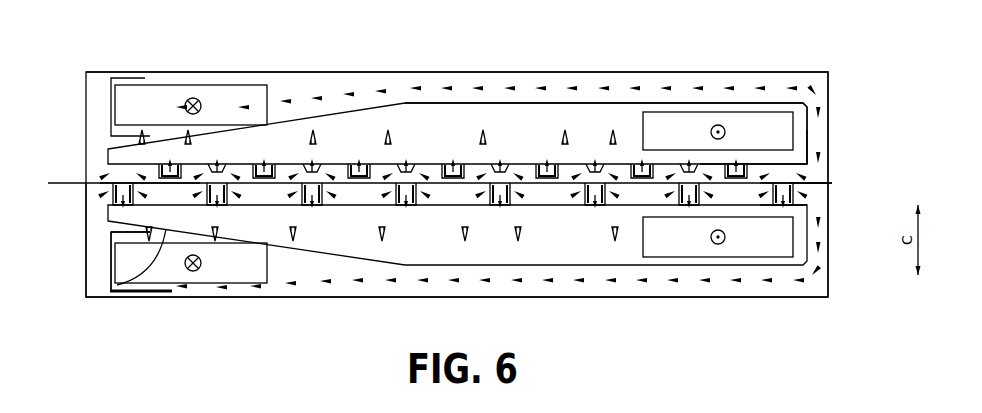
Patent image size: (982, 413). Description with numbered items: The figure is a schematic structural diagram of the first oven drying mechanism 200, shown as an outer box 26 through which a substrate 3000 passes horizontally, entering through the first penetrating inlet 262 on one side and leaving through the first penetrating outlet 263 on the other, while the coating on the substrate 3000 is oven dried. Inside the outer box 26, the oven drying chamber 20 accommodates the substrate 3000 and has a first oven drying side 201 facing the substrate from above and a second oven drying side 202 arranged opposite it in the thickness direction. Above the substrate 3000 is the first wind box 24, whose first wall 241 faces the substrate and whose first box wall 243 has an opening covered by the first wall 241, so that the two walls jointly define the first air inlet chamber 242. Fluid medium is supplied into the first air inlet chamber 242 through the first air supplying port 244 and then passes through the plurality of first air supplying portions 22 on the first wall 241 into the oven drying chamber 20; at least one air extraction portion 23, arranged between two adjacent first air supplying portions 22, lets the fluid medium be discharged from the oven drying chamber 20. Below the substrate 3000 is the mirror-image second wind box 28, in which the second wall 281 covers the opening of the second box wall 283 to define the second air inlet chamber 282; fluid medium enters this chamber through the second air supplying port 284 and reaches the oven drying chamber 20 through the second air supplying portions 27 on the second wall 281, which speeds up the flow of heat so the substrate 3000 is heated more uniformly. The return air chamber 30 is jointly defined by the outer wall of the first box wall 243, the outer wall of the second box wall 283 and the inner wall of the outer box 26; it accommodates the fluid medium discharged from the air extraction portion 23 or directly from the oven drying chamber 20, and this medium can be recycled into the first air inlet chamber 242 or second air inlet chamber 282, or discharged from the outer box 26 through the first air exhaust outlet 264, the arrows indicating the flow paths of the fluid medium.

The first oven drying mechanism 200 is at (546, 16).
The oven drying chamber 20 is at (122, 183).
The first oven drying side 201 is at (793, 181).
The second oven drying side 202 is at (805, 205).
The first air supplying portion 22 is at (641, 160).
The air extraction portion 23 is at (688, 166).
The first wind box 24 is at (881, 78).
The first wall 241 is at (789, 163).
The first air inlet chamber 242 is at (445, 120).
The first box wall 243 is at (806, 103).
The first air supplying port 244 is at (740, 118).
The outer box 26 is at (830, 270).
The first penetrating inlet 262 is at (112, 190).
The first penetrating outlet 263 is at (832, 183).
The first air exhaust outlet 264 is at (172, 101).
The second air supplying portion 27 is at (594, 207).
The second wind box 28 is at (41, 248).
The second wall 281 is at (140, 238).
The second air inlet chamber 282 is at (440, 240).
The second box wall 283 is at (110, 289).
The second air supplying port 284 is at (740, 240).
The return air chamber 30 is at (370, 88).
The substrate 3000 is at (62, 184).